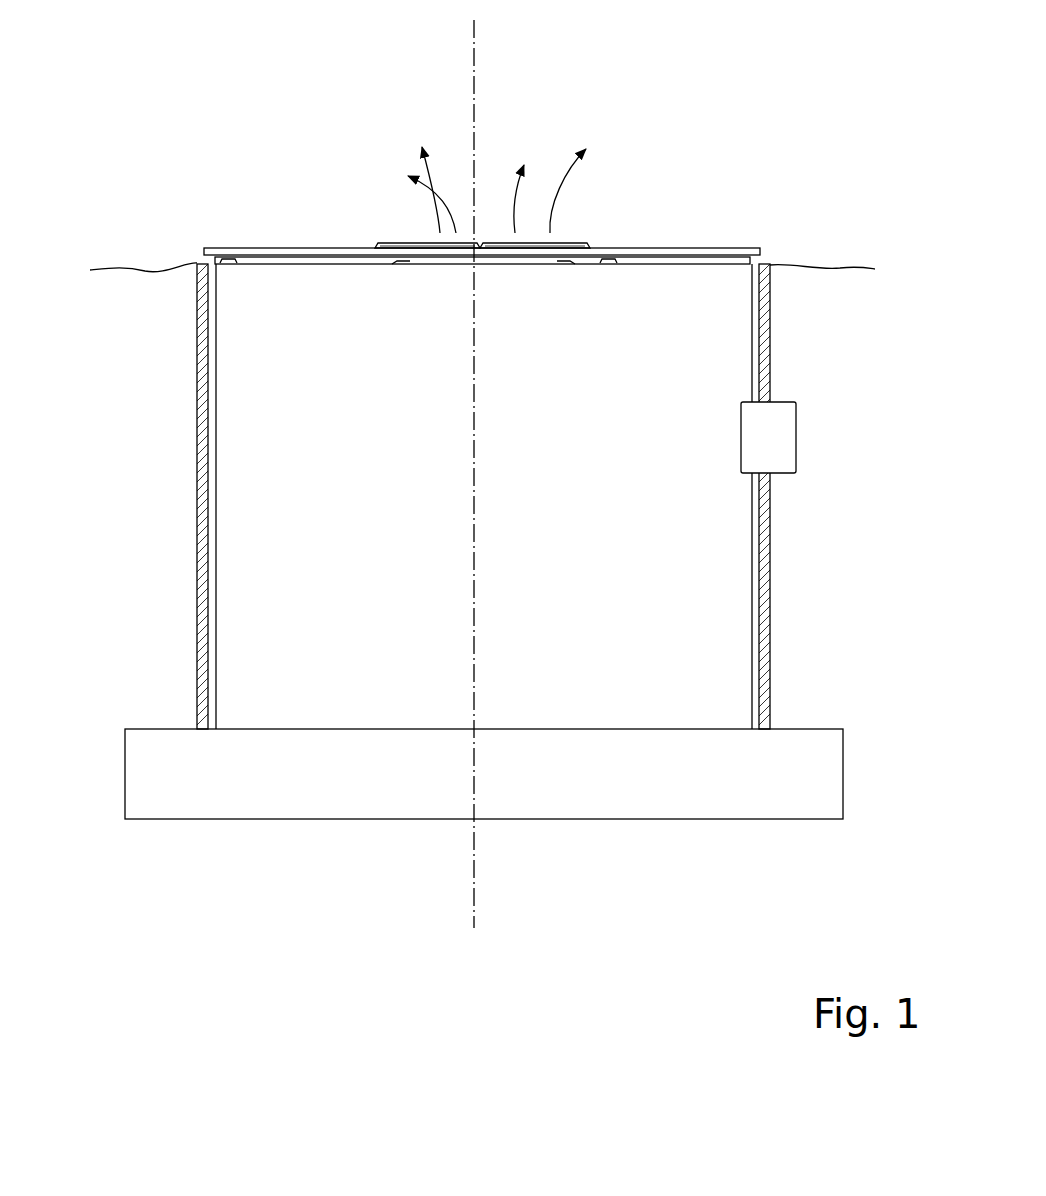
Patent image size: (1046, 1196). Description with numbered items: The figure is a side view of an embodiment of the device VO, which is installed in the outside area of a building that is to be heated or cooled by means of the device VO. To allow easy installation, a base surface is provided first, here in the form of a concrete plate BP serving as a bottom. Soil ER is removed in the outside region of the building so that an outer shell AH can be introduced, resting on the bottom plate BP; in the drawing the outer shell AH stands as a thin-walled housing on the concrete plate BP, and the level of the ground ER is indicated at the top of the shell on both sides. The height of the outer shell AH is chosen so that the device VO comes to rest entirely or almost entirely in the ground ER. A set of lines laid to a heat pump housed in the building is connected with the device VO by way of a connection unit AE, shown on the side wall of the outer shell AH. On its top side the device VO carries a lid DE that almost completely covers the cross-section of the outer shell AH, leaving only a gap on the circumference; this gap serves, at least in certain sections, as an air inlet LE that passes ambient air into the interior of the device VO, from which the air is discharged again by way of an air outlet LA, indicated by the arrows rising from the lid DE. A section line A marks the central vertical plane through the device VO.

The section line A-A' A is at (480, 30).
The concrete plate BP is at (320, 779).
The outer shell AH is at (200, 373).
The connection unit AE is at (772, 433).
The lid DE is at (720, 252).
The device VO is at (402, 211).
The air outlet LA is at (437, 213).
The soil ER is at (118, 310).
The air inlet LE is at (199, 261).